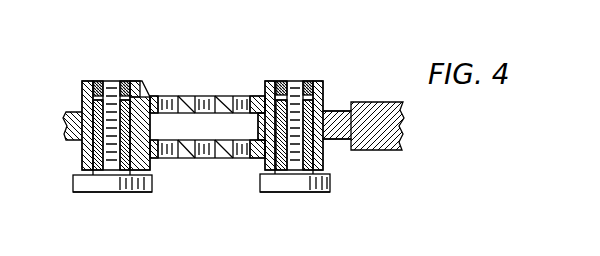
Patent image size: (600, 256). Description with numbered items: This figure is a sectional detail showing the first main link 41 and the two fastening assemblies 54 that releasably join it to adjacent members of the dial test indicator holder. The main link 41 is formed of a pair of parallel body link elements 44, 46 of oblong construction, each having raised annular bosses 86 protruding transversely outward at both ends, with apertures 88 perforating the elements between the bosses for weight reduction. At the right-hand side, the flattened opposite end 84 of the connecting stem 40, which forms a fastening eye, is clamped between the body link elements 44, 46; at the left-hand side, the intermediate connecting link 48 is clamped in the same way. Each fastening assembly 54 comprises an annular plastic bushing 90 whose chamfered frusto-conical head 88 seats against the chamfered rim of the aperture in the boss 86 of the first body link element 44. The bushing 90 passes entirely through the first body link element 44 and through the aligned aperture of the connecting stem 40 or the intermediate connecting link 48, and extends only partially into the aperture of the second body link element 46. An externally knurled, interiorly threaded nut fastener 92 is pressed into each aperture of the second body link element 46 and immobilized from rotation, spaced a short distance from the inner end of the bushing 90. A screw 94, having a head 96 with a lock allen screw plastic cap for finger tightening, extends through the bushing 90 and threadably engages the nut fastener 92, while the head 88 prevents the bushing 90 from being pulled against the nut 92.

The connecting stem 40 is at (383, 98).
The first main link 41 is at (212, 66).
The body link element 44 is at (218, 159).
The body link element 46 is at (165, 95).
The intermediate connecting link 48 is at (70, 108).
The fastening assembly 54 is at (106, 201).
The opposite end of connecting stem 84 is at (329, 110).
The raised annular boss 86 is at (146, 95).
The chamfered frusto-conical head 88 is at (240, 113).
The annular plastic bushing 90 is at (328, 150).
The nut fastener 92 is at (121, 81).
The screw 94 is at (130, 197).
The screw head 96 is at (75, 192).